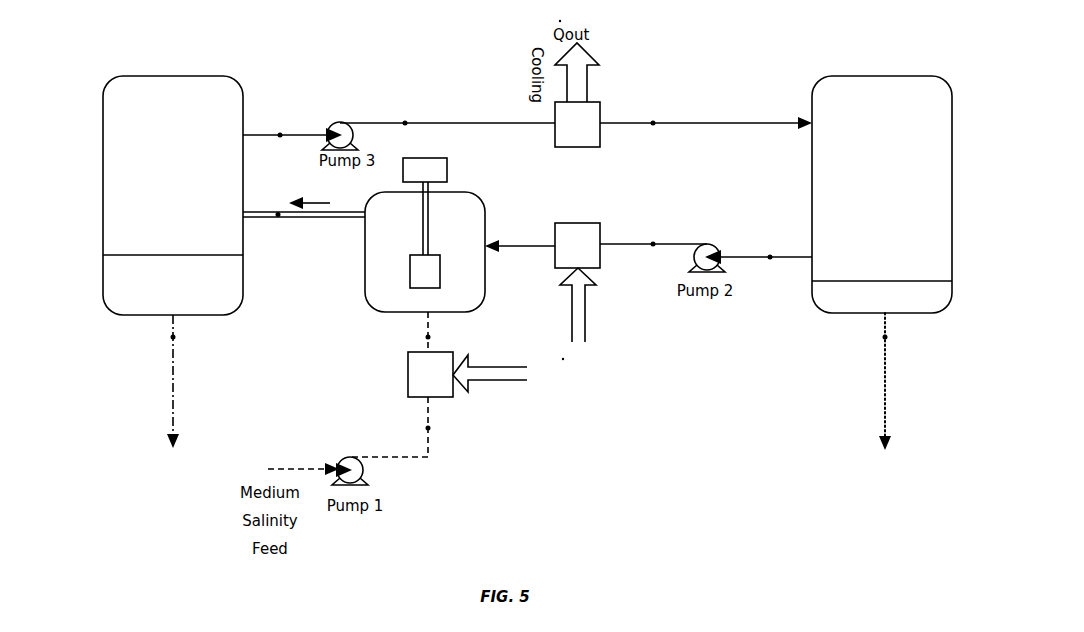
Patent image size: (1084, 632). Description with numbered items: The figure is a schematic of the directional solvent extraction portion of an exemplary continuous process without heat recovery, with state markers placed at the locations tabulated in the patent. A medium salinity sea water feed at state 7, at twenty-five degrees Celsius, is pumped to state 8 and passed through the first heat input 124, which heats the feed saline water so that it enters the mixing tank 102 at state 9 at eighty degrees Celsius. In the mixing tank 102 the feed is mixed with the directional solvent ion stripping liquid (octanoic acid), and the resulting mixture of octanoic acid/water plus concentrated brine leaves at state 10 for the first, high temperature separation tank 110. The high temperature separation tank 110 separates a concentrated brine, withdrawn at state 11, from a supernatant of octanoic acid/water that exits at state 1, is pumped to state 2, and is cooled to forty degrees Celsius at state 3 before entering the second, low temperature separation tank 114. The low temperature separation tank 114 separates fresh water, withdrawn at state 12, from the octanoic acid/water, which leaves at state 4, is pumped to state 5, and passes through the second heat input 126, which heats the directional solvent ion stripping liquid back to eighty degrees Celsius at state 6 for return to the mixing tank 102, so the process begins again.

The first separation tank 110 is at (103, 97).
The second separation tank 114 is at (812, 97).
The mixing tank 102 is at (365, 276).
The heat input 124 is at (408, 376).
The heat input 126 is at (578, 223).
The state marker 1 is at (285, 110).
The state marker 2 is at (447, 98).
The state marker 3 is at (706, 99).
The state marker 4 is at (759, 232).
The state marker 5 is at (653, 218).
The state marker 6 is at (520, 233).
The state marker 7 is at (303, 443).
The state marker 8 is at (428, 427).
The state marker 9 is at (391, 332).
The state marker 10 is at (304, 236).
The state marker 11 is at (212, 381).
The state marker 12 is at (839, 381).